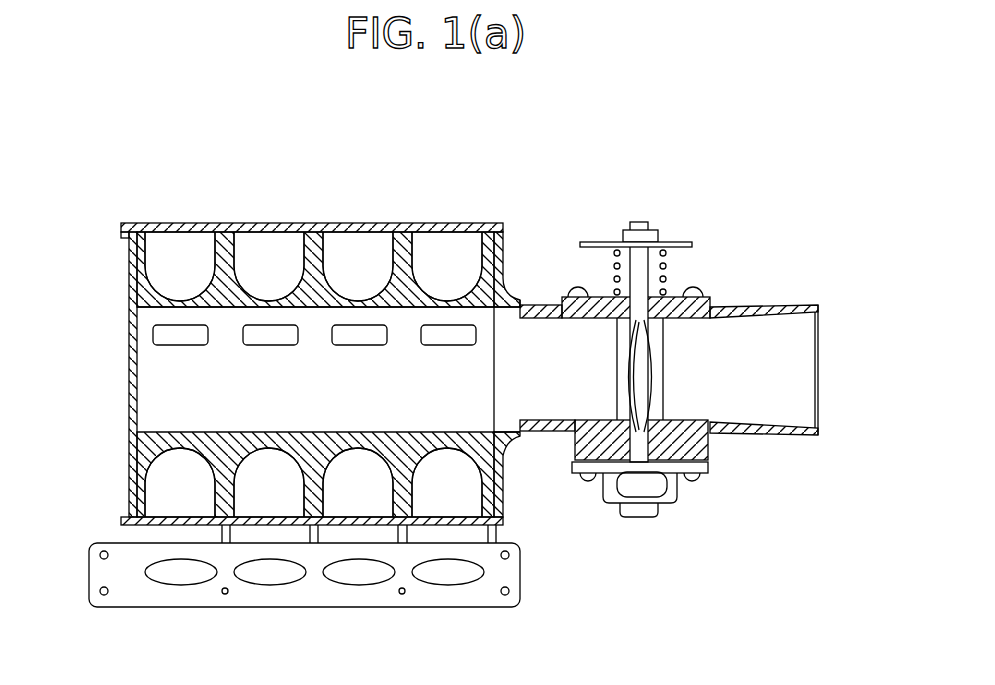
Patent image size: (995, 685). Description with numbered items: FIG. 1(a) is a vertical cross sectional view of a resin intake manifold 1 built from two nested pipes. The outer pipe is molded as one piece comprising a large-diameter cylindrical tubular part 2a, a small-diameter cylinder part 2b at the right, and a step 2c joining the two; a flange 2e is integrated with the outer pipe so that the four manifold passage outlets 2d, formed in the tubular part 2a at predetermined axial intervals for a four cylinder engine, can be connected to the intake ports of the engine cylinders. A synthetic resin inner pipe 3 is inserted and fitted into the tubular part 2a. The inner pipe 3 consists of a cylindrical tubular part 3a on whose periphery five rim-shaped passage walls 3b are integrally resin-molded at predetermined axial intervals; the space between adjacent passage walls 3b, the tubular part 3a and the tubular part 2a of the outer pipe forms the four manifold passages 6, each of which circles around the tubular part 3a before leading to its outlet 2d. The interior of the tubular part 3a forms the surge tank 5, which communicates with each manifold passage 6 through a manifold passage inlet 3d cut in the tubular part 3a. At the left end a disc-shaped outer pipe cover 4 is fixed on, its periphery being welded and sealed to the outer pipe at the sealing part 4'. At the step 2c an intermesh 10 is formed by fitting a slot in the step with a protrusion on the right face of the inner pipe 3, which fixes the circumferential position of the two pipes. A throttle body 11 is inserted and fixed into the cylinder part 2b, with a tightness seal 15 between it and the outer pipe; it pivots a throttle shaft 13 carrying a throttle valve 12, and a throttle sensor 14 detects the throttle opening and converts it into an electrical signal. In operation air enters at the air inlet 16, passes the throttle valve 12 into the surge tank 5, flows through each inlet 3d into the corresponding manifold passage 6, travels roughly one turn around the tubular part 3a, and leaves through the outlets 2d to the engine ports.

The intake manifold 1 is at (448, 195).
The cylindrical tubular part 2a is at (268, 226).
The cylinder part 2b is at (781, 307).
The step 2c is at (505, 252).
The manifold passage outlet 2d is at (314, 615).
The flange 2e is at (351, 607).
The inner pipe 3 is at (295, 319).
The cylindrical tubular part 3a is at (160, 308).
The passage wall 3b is at (497, 248).
The manifold passage inlet 3d is at (445, 340).
The outer pipe cover 4 is at (93, 374).
The sealing part 4' is at (90, 221).
The surge tank 5 is at (304, 418).
The manifold passage 6 is at (453, 273).
The intermesh 10 is at (503, 448).
The throttle body 11 is at (672, 284).
The throttle valve 12 is at (655, 377).
The throttle shaft 13 is at (640, 221).
The throttle sensor 14 is at (669, 498).
The tightness seal 15 is at (700, 446).
The air inlet 16 is at (770, 382).